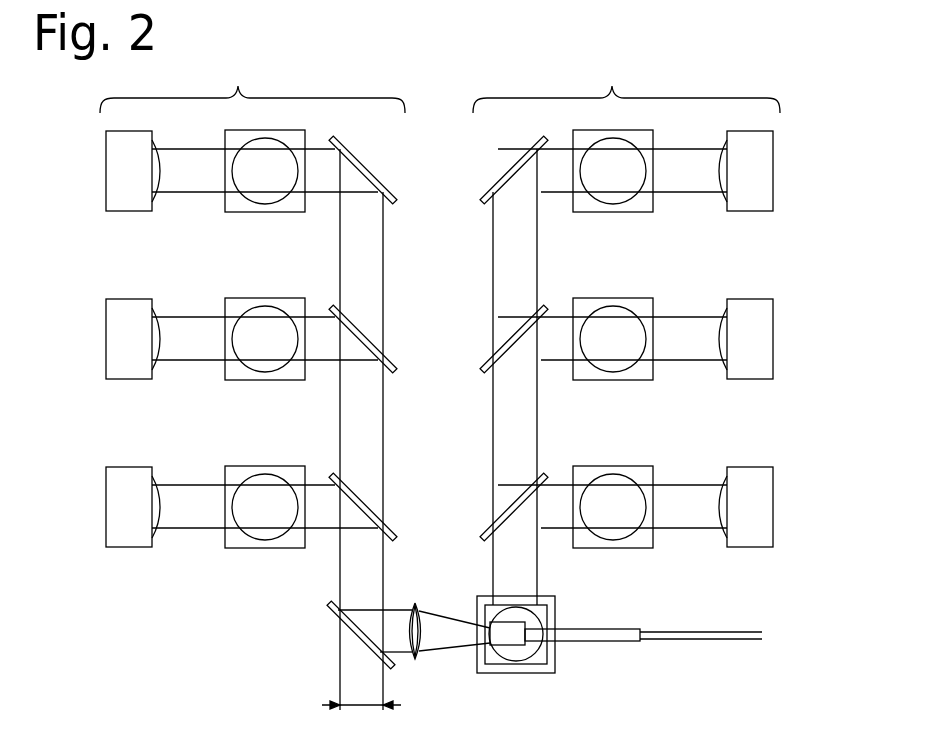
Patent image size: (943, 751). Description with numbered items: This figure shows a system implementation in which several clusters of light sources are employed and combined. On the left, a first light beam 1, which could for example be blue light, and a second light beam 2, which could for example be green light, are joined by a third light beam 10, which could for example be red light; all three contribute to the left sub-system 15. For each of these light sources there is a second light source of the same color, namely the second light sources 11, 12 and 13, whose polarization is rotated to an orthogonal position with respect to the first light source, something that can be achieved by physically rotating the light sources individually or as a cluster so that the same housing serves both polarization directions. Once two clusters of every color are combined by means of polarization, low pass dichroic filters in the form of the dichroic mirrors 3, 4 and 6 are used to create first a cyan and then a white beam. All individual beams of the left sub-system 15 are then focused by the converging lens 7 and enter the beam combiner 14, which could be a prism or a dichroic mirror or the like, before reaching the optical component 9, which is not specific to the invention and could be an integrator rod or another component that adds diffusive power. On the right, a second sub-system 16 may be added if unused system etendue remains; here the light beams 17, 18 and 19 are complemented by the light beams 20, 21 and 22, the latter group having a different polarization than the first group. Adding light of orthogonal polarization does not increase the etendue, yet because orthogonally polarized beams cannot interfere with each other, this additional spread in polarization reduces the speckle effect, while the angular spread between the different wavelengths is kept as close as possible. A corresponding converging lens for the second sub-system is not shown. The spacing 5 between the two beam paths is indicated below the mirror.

The light beam 1 is at (116, 150).
The light beam 2 is at (116, 318).
The third light beam 10 is at (116, 486).
The second light source 11 is at (234, 137).
The second light source 12 is at (235, 307).
The second light source 13 is at (240, 475).
The dichroic mirror 3 is at (367, 167).
The dichroic mirror 4 is at (394, 364).
The dichroic mirror 6 is at (393, 531).
The left sub-system 15 is at (252, 86).
The second sub-system 16 is at (626, 86).
The light beam 17 is at (753, 148).
The light beam 18 is at (758, 316).
The light beam 19 is at (758, 492).
The light beam 20 is at (637, 207).
The light beam 21 is at (635, 375).
The light beam 22 is at (618, 545).
The mirror / beam spacing 5 is at (361, 655).
The converging lens 7 is at (417, 655).
The optical component 9 is at (522, 637).
The beam combiner 14 is at (506, 660).